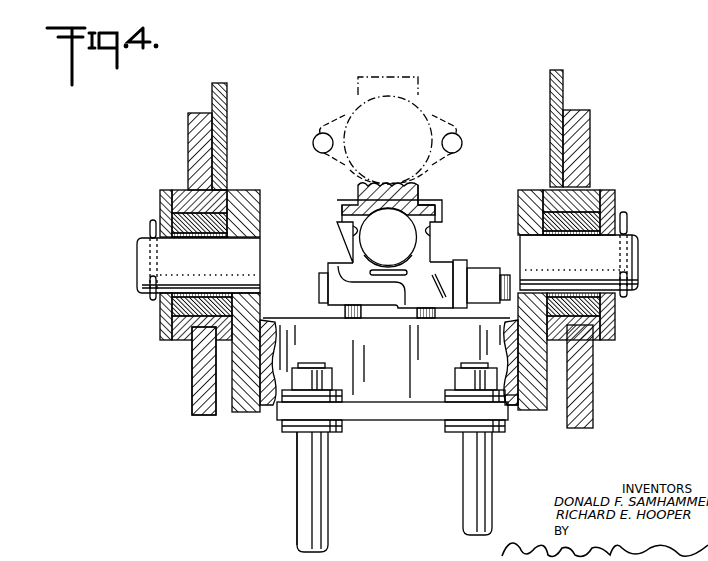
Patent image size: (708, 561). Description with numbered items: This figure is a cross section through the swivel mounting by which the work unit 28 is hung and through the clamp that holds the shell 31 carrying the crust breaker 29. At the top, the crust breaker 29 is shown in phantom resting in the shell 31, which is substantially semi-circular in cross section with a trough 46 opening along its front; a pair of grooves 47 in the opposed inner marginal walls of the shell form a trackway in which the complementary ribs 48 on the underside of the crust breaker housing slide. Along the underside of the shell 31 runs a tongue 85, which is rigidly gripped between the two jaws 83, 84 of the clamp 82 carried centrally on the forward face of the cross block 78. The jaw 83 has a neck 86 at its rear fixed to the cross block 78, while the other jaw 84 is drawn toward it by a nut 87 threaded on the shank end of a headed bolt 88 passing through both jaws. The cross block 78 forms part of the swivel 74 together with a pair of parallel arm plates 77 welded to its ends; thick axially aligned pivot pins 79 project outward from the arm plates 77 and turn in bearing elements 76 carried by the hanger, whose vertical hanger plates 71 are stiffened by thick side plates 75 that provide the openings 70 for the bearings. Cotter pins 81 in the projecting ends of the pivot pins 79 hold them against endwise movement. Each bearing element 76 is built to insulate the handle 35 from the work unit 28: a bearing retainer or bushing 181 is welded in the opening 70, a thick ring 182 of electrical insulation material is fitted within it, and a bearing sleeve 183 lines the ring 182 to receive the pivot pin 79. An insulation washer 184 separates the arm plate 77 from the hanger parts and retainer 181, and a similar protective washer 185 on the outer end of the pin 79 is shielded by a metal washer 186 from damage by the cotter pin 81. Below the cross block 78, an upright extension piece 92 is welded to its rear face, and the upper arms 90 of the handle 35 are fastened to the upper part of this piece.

The work unit 28 is at (330, 108).
The crust breaker 29 is at (432, 105).
The shell 31 is at (433, 233).
The handle 35 is at (300, 525).
The cavity or trough 46 is at (352, 235).
The grooves 47 is at (352, 190).
The ribs 48 is at (425, 190).
The openings 70 is at (228, 185).
The hanger plates 71 is at (228, 97).
The swivel 74 is at (515, 405).
The side plates 75 is at (188, 116).
The bearing elements 76 is at (158, 207).
The arm plates 77 is at (262, 193).
The cross block 78 is at (445, 347).
The pivot pins 79 is at (136, 260).
The cotter pins 81 is at (628, 222).
The clamp 82 is at (395, 322).
The jaw 83 is at (343, 263).
The jaw 84 is at (442, 260).
The tongue 85 is at (358, 268).
The neck 86 is at (345, 318).
The nut 87 is at (494, 294).
The headed bolt 88 is at (320, 288).
The upper arms 90 is at (330, 508).
The extension piece 92 is at (410, 410).
The bearing retainer or bushing 181 is at (180, 352).
The ring of electrical insulation material 182 is at (168, 328).
The bearing sleeve 183 is at (200, 240).
The insulation washer 184 is at (240, 240).
The protective washer 185 is at (172, 190).
The metal washer 186 is at (160, 308).